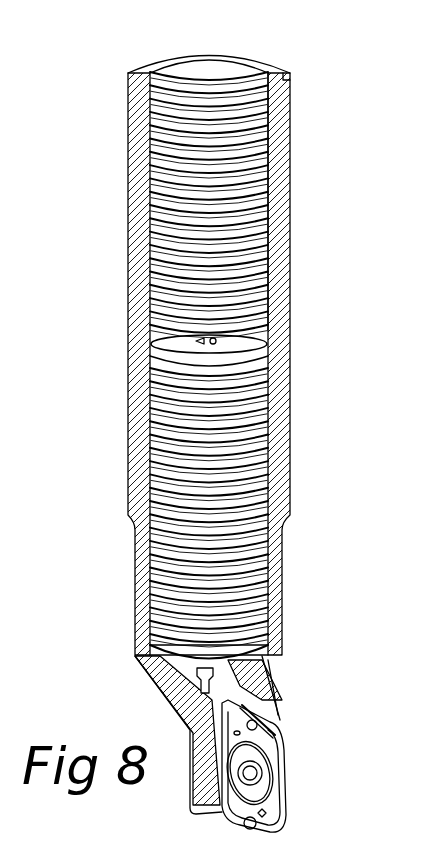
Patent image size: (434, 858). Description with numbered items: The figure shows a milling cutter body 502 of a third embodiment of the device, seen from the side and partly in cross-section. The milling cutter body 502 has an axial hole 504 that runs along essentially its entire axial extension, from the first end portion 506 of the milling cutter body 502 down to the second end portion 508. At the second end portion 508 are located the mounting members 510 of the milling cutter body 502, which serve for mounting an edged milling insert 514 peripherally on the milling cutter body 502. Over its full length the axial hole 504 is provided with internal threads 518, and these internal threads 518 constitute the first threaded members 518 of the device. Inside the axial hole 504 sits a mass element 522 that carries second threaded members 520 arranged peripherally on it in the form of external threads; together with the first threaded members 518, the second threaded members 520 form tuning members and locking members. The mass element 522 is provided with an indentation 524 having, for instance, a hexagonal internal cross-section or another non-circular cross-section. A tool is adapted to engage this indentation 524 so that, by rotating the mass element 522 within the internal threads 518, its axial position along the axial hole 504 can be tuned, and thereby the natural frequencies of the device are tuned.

The milling cutter body 502 is at (120, 186).
The axial hole 504 is at (210, 83).
The first end portion 506 is at (290, 103).
The second end portion 508 is at (272, 652).
The mounting members 510 is at (252, 775).
The edged milling insert 514 is at (265, 728).
The internal threads 518 is at (262, 186).
The second threaded members 520 is at (187, 390).
The mass element 522 is at (237, 347).
The indentation 524 is at (210, 342).